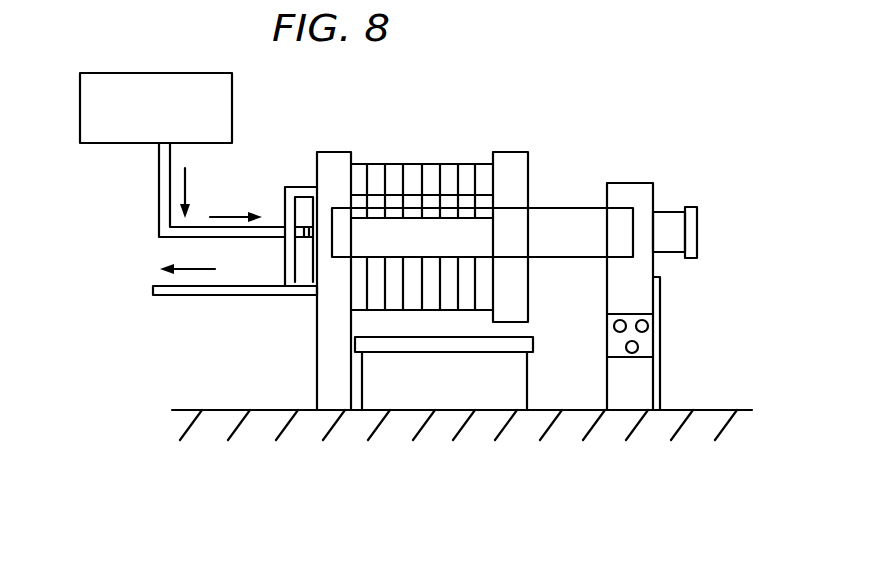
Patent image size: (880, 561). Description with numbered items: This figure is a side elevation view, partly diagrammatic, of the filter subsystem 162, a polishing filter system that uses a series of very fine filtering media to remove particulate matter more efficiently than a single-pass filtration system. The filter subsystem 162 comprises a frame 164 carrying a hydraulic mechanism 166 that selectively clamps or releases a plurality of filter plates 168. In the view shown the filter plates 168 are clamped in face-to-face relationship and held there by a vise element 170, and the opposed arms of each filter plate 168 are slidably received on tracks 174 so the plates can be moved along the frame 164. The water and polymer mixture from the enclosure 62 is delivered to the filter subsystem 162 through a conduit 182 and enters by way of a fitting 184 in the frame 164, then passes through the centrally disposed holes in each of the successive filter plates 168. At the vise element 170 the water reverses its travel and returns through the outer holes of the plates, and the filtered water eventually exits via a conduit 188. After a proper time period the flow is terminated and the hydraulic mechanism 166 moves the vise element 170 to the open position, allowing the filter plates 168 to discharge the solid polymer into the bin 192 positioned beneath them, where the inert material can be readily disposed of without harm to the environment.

The enclosure 62 is at (244, 90).
The filter subsystem 162 is at (519, 104).
The frame 164 is at (328, 366).
The hydraulic mechanism 166 is at (665, 212).
The filter plates 168 is at (445, 164).
The vise element 170 is at (513, 163).
The tracks 174 is at (553, 238).
The conduit 182 is at (159, 182).
The fitting 184 is at (312, 227).
The conduit 188 is at (173, 295).
The bin 192 is at (460, 394).